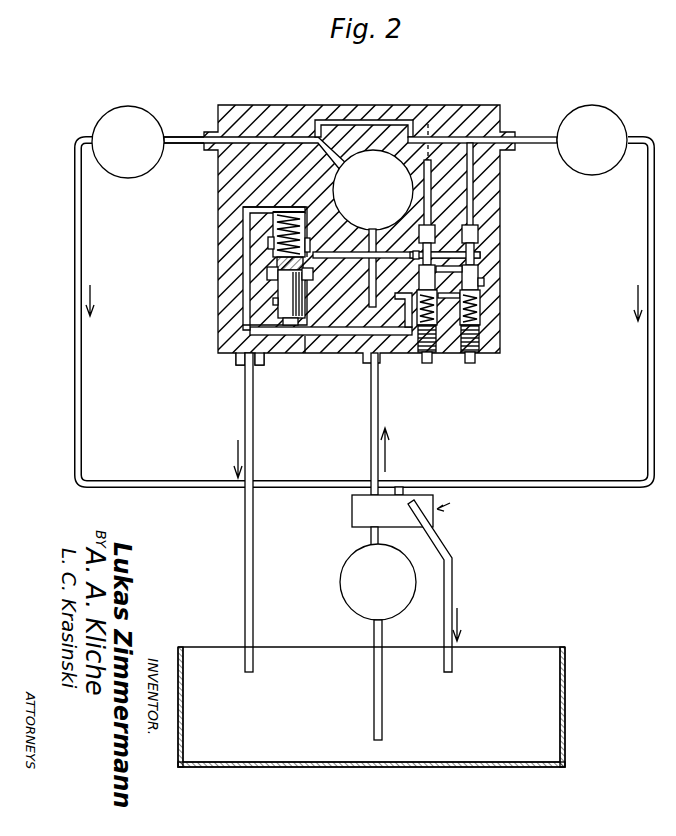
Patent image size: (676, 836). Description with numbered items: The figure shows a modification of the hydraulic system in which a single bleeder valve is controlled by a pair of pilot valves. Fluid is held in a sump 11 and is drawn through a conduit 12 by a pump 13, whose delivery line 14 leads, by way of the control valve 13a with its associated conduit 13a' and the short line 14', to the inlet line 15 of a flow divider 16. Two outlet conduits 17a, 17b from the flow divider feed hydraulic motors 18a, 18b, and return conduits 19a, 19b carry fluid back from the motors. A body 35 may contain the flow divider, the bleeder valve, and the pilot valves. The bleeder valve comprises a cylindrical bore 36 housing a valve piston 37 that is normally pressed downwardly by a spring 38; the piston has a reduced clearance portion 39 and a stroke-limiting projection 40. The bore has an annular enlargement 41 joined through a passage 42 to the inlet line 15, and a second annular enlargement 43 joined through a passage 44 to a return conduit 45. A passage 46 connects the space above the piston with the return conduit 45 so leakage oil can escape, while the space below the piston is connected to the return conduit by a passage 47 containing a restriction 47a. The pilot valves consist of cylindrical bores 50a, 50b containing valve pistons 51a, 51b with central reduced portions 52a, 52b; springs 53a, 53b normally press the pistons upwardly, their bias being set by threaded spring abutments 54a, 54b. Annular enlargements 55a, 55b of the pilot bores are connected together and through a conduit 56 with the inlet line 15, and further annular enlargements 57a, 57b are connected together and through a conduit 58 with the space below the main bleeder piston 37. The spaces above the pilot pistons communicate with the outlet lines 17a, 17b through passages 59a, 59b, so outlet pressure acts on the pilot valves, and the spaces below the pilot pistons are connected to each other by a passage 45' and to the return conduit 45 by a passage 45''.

The sump 11 is at (566, 670).
The conduit 12 is at (383, 636).
The pump 13 is at (341, 567).
The control valve 13a is at (444, 507).
The control valve conduit 13a' is at (454, 586).
The delivery line 14 is at (361, 424).
The pump discharge line 14' is at (342, 535).
The inlet line 15 is at (340, 260).
The flow divider 16 is at (346, 152).
The outlet conduit 17a is at (250, 136).
The outlet conduit 17b is at (531, 136).
The hydraulic motor 18a is at (125, 106).
The hydraulic motor 18b is at (610, 115).
The return conduit 19a is at (76, 409).
The return conduit 19b is at (647, 394).
The body 35 is at (496, 103).
The cylindrical bore 36 is at (285, 305).
The valve piston 37 is at (276, 263).
The spring 38 is at (277, 216).
The reduced clearance portion 39 is at (285, 285).
The stroke-limiting projection 40 is at (300, 356).
The annular enlargement 41 is at (267, 273).
The passage 42 is at (273, 322).
The annular enlargement 43 is at (272, 232).
The passage 44 is at (268, 247).
The return conduit 45 is at (225, 512).
The passage 45' is at (393, 274).
The passage 45'' is at (293, 386).
The passage 46 is at (272, 207).
The passage 47 is at (249, 333).
The restriction 47a is at (266, 356).
The cylindrical bore 50a is at (397, 346).
The cylindrical bore 50b is at (482, 298).
The valve piston 51a is at (437, 232).
The valve piston 51b is at (479, 234).
The central reduced portion 52a is at (481, 252).
The central reduced portion 52b is at (458, 262).
The spring 53a is at (466, 364).
The spring 53b is at (478, 314).
The threaded spring abutment 54a is at (428, 364).
The threaded spring abutment 54b is at (480, 350).
The annular enlargement 55a is at (440, 247).
The annular enlargement 55b is at (479, 266).
The conduit 56 is at (382, 250).
The annular enlargement 57a is at (450, 278).
The annular enlargement 57b is at (480, 284).
The conduit 58 is at (352, 338).
The passage 59a is at (400, 121).
The passage 59b is at (473, 152).